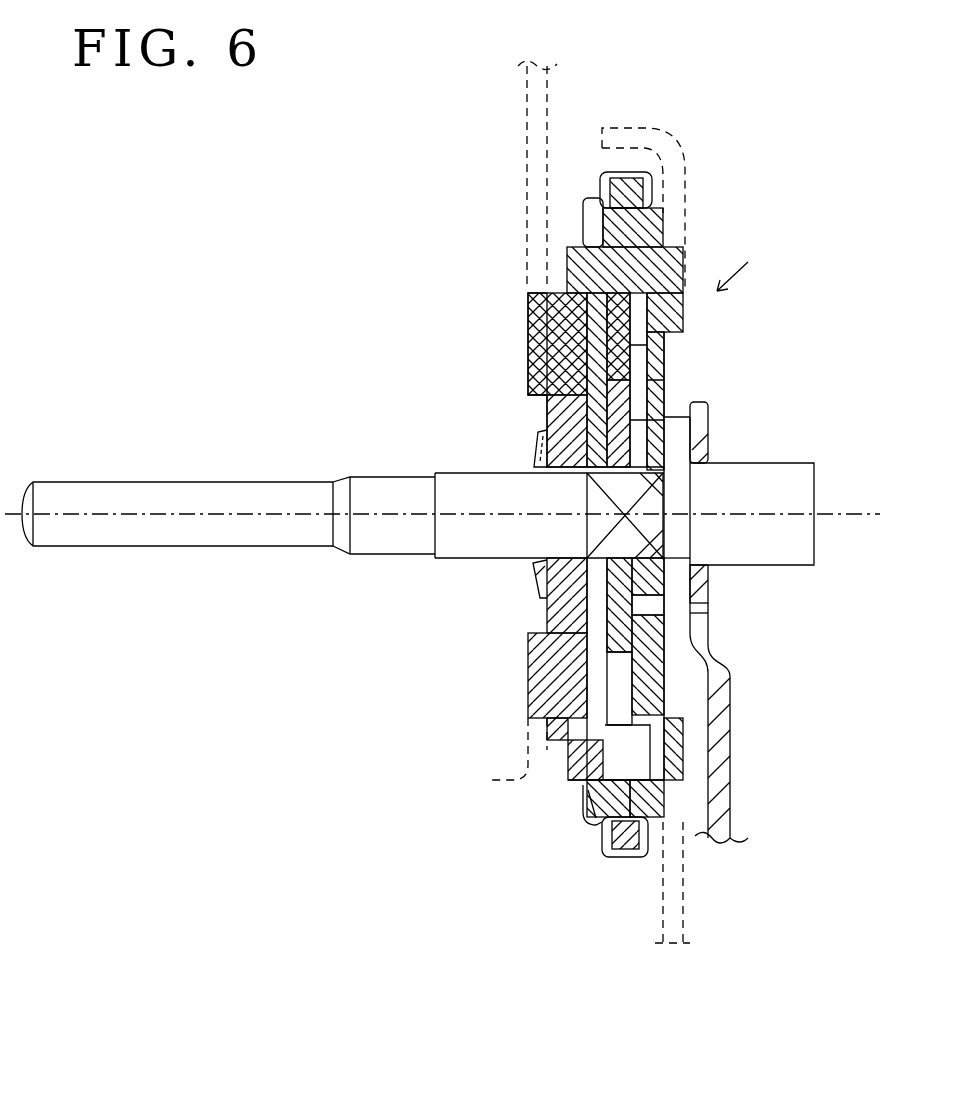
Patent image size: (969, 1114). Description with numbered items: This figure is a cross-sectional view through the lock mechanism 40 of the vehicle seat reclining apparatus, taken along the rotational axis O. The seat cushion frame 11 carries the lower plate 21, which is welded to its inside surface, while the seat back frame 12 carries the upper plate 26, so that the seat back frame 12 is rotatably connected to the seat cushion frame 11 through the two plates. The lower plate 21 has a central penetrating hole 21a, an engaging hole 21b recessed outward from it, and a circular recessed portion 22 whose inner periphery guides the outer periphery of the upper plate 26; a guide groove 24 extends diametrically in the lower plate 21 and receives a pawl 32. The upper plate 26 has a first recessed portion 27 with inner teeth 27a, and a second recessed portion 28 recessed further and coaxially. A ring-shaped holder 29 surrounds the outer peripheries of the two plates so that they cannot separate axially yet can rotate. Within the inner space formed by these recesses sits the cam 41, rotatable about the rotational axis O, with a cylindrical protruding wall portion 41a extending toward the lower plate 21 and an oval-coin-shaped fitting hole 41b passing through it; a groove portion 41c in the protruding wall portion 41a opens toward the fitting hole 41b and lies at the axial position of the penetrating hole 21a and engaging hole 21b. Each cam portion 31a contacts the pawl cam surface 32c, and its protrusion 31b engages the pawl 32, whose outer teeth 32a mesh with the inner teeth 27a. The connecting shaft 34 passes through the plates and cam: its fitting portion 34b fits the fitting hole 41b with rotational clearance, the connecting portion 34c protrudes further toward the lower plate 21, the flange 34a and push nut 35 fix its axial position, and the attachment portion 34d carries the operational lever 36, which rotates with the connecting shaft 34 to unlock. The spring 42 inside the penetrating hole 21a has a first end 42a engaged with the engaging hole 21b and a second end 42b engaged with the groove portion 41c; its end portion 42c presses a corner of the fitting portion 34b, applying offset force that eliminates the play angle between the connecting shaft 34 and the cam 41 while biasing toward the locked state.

The seat cushion frame 11 is at (688, 912).
The seat back frame 12 is at (527, 122).
The lower plate 21 is at (655, 346).
The penetrating hole 21a is at (635, 381).
The engaging hole 21b is at (665, 688).
The recessed portion 22 is at (625, 856).
The guide groove 24 is at (647, 261).
The upper plate 26 is at (530, 387).
The first recessed portion 27 is at (618, 779).
The inner teeth 27a is at (597, 205).
The second recessed portion 28 is at (606, 733).
The holder 29 is at (592, 838).
The cam portion 31a is at (645, 318).
The protrusion 31b is at (612, 352).
The pawl 32 is at (547, 293).
The outer teeth 32a is at (633, 232).
The pawl cam surface 32c is at (587, 318).
The connecting shaft 34 is at (352, 478).
The flange 34a is at (690, 603).
The fitting portion 34b is at (672, 492).
The connecting portion 34c is at (402, 490).
The attachment portion 34d is at (798, 466).
The push nut 35 is at (533, 568).
The operational lever 36 is at (730, 716).
The lock mechanism 40 is at (754, 267).
The cam 41 is at (560, 612).
The protruding wall portion 41a is at (684, 566).
The fitting hole 41b is at (615, 546).
The groove portion 41c is at (600, 455).
The spring 42 is at (680, 615).
The first end 42a is at (585, 663).
The second end 42b is at (672, 445).
The end portion 42c is at (615, 484).
The rotational axis O is at (845, 512).